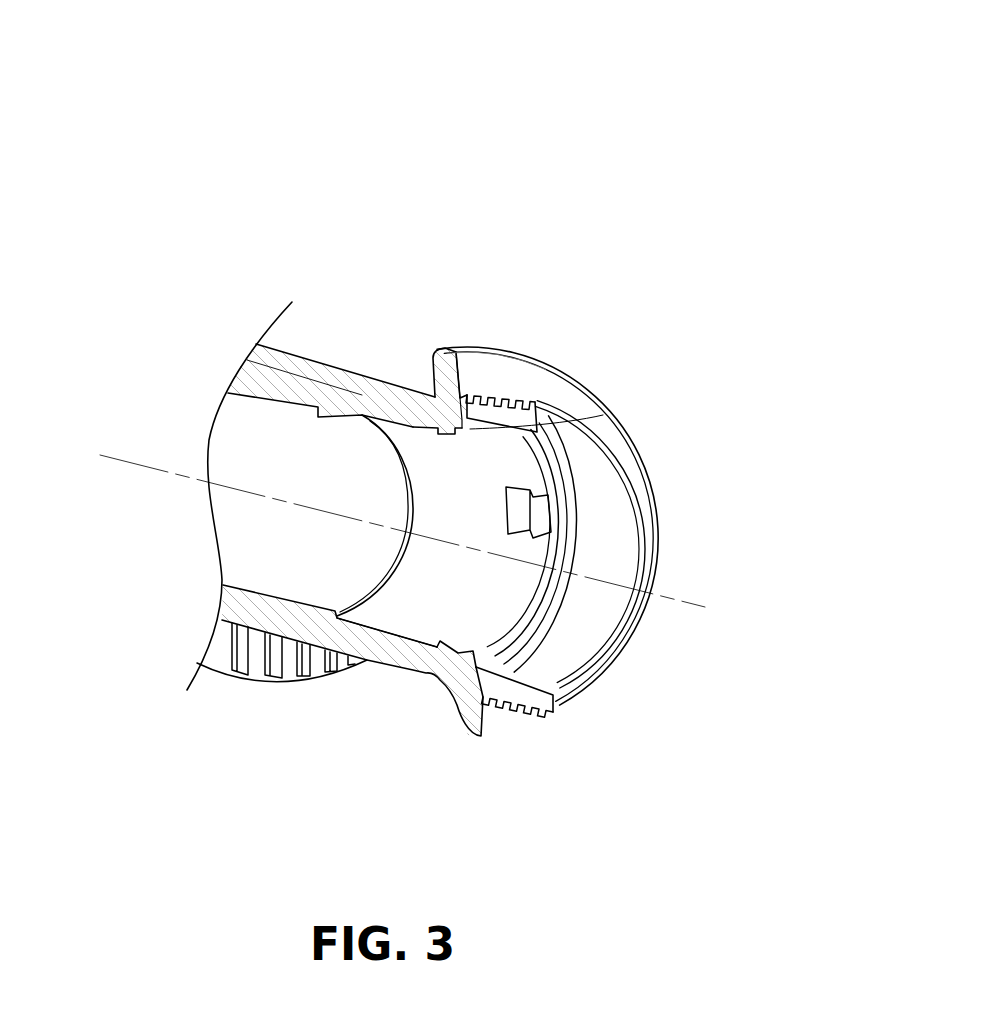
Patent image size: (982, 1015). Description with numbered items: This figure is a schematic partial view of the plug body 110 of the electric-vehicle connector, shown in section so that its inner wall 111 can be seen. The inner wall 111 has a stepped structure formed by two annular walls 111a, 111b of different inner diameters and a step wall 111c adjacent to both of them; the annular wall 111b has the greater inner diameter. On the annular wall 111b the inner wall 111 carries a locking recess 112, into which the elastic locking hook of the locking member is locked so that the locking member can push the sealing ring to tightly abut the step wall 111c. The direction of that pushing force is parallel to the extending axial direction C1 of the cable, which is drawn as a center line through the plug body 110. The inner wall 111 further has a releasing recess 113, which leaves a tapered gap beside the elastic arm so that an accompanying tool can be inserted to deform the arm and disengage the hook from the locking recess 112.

The plug body 110 is at (323, 366).
The inner wall 111 is at (546, 34).
The annular wall 111a is at (247, 567).
The annular wall 111b is at (453, 617).
The step wall 111c is at (373, 597).
The locking recess 112 is at (468, 431).
The releasing recess 113 is at (523, 495).
The extending axial direction C1 is at (385, 522).